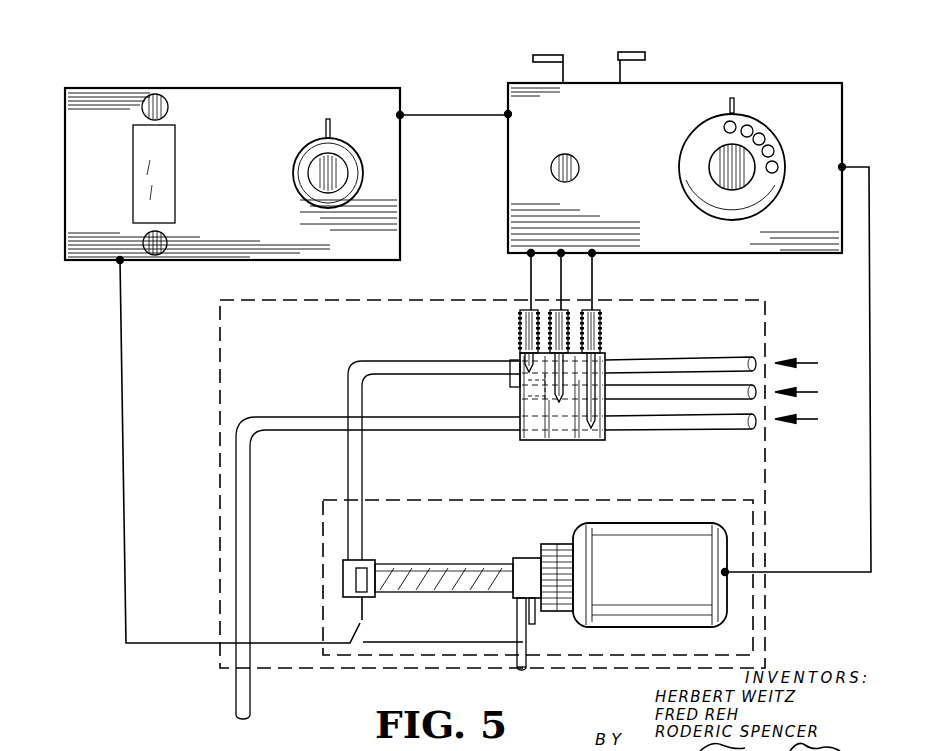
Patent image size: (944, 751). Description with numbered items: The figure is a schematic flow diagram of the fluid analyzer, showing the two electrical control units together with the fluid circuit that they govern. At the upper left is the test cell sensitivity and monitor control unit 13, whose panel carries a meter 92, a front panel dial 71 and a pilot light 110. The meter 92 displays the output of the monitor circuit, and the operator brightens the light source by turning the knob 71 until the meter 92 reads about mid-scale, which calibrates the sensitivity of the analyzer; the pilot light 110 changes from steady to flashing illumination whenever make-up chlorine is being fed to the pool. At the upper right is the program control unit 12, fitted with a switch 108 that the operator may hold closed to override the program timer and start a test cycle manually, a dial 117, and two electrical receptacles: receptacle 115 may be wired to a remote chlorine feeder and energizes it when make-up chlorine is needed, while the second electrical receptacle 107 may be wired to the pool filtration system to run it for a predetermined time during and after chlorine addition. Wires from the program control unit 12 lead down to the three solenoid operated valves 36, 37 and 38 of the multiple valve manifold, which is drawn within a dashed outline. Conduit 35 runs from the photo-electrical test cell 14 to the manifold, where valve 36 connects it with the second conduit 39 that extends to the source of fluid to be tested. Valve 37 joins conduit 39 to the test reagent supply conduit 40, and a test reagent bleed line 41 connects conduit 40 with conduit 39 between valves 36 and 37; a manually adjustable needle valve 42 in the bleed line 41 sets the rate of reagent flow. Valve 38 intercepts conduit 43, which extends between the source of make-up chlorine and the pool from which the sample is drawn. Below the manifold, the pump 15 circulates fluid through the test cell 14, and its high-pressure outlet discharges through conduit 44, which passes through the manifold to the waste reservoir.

The test cell sensitivity and monitor control unit 13 is at (254, 145).
The pilot light 110 is at (176, 72).
The meter 92 is at (148, 172).
The front panel dial 71 is at (350, 158).
The program control unit 12 is at (639, 174).
The second electrical receptacle 107 is at (540, 56).
The electrical receptacle 115 is at (646, 40).
The switch 108 is at (574, 140).
The selector dial 117 is at (776, 142).
The solenoid operated valve 36 is at (520, 320).
The solenoid operated valve 37 is at (562, 313).
The solenoid operated valve 38 is at (600, 317).
The test reagent bleed line 41 is at (518, 389).
The needle valve 42 is at (514, 362).
The conduit 35 is at (348, 384).
The second conduit 39 is at (692, 358).
The test reagent supply conduit 40 is at (690, 386).
The conduit 43 is at (660, 432).
The photo-electrical test cell 14 is at (470, 550).
The conduit 44 is at (517, 628).
The pump 15 is at (632, 622).